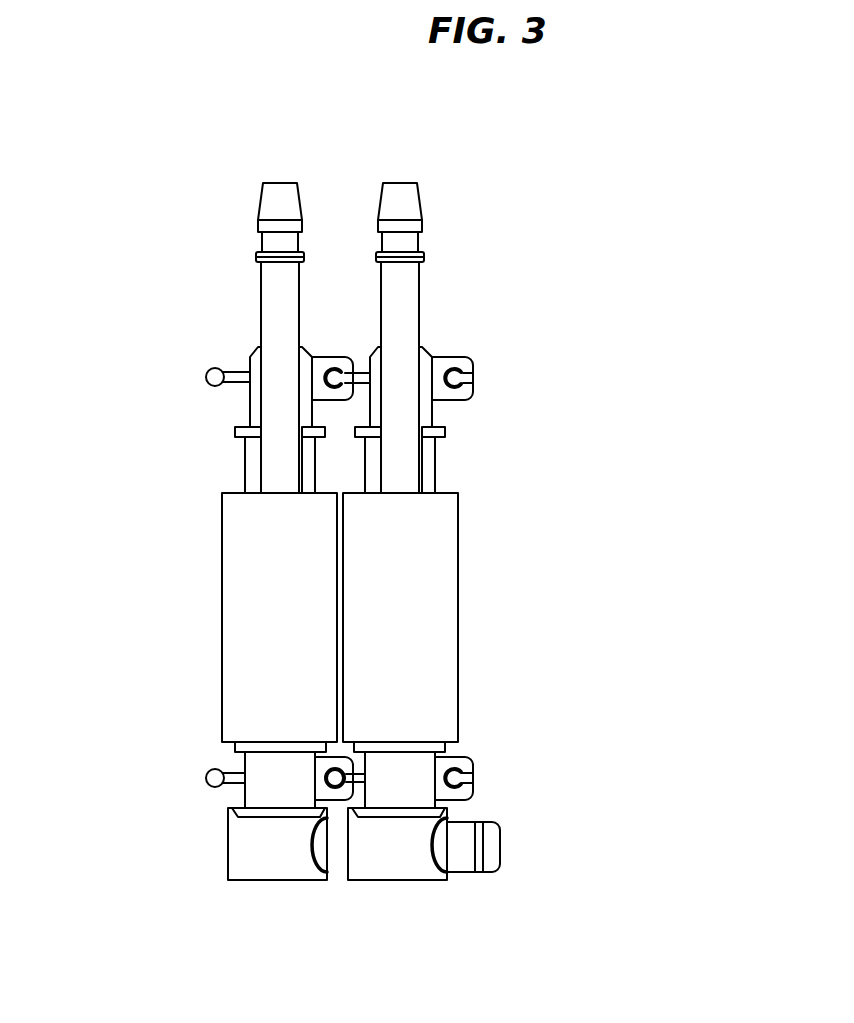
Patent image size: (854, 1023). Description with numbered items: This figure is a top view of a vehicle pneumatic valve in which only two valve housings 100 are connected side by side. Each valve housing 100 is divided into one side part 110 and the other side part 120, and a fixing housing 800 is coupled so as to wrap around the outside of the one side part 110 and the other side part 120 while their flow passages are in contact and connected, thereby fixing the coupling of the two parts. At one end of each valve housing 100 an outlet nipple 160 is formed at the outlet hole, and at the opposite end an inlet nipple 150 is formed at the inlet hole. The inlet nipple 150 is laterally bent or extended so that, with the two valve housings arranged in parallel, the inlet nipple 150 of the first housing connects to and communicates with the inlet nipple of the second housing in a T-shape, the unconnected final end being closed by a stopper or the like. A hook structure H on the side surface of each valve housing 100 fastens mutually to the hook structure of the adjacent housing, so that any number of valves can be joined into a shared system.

The valve housing 100 is at (216, 307).
The one side part 110 is at (257, 453).
The other side part 120 is at (265, 793).
The inlet nipple 150 is at (278, 858).
The outlet nipple 160 is at (273, 226).
The fixing housing 800 is at (243, 603).
The hook structure H is at (333, 334).